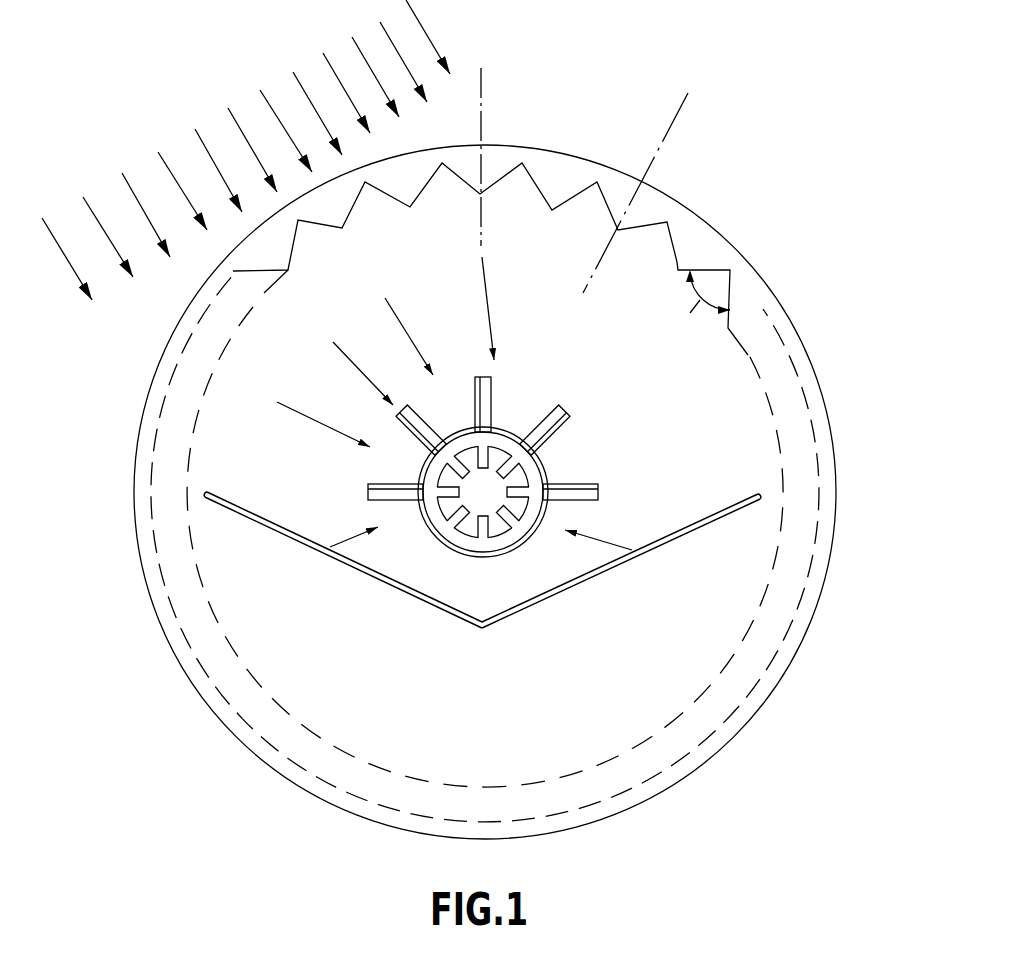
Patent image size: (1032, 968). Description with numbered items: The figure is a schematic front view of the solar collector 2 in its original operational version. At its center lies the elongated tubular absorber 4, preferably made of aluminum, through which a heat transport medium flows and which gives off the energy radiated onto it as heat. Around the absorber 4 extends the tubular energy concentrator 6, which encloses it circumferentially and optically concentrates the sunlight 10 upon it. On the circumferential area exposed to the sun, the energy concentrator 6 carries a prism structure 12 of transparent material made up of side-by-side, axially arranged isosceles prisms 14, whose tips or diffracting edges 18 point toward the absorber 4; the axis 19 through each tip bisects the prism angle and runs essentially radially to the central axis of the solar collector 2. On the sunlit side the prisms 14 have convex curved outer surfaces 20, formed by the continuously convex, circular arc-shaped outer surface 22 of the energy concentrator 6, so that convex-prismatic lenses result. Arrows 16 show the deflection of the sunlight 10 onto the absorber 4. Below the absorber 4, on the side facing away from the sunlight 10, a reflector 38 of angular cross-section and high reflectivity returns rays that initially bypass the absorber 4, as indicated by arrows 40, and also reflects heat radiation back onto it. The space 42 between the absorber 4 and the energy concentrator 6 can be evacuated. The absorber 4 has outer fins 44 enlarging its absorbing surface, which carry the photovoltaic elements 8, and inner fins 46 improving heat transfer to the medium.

The solar collector 2 is at (688, 151).
The absorber 4 is at (552, 467).
The energy concentrator 6 is at (814, 370).
The photovoltaic elements 8 is at (418, 414).
The sunlight 10 is at (206, 104).
The prism structure 12 is at (700, 233).
The prisms 14 is at (400, 187).
The arrows 16 is at (475, 292).
The tips 18 is at (411, 209).
The axis 19 is at (482, 90).
The convex curved outer surfaces 20 is at (631, 175).
The outer surface 22 is at (162, 350).
The reflector 38 is at (660, 542).
The arrows 40 is at (330, 547).
The space 42 is at (710, 365).
The outer fins 44 is at (495, 397).
The inner fins 46 is at (460, 492).